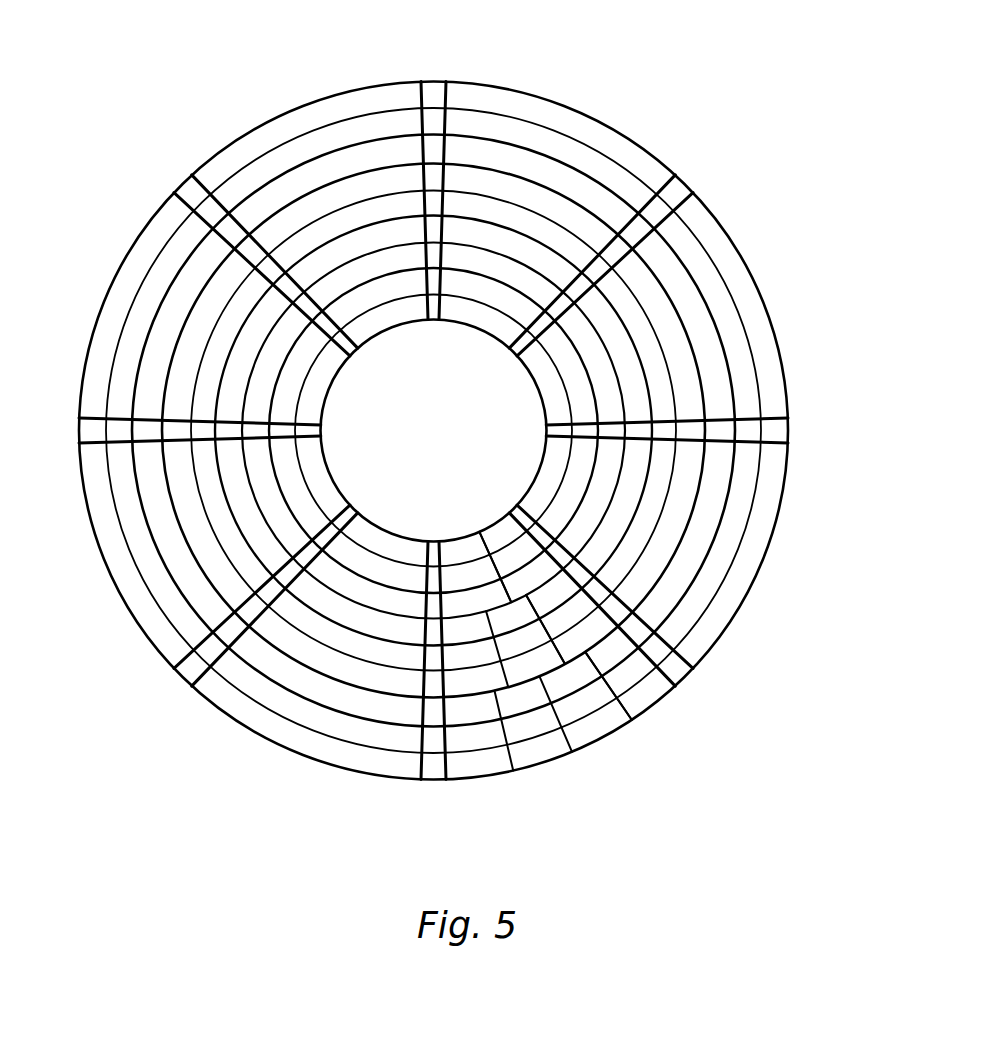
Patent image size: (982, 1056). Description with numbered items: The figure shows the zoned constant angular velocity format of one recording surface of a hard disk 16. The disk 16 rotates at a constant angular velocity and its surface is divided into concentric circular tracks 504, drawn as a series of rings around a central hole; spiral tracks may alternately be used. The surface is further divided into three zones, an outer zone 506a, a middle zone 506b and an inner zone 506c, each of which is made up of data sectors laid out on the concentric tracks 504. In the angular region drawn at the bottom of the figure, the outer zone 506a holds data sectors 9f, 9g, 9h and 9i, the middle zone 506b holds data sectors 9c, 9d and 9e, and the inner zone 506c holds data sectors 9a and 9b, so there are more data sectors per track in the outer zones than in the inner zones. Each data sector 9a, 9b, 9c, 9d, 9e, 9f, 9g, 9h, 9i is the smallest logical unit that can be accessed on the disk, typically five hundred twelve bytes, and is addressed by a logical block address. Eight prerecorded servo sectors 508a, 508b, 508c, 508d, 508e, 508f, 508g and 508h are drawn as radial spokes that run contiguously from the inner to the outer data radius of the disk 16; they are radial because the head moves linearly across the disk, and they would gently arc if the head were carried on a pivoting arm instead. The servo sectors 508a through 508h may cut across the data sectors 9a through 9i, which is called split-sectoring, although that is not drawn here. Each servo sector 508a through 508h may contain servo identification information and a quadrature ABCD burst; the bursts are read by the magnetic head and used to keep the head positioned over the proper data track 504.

The disk 16 is at (244, 790).
The track 504 is at (162, 282).
The outer zone 506a is at (489, 134).
The middle zone 506b is at (515, 203).
The inner zone 506c is at (500, 284).
The servo sector 508a is at (434, 81).
The servo sector 508b is at (686, 182).
The servo sector 508c is at (788, 428).
The servo sector 508d is at (690, 684).
The servo sector 508e is at (432, 783).
The servo sector 508f is at (182, 680).
The servo sector 508g is at (78, 432).
The servo sector 508h is at (183, 181).
The data sector 9a is at (480, 567).
The data sector 9b is at (505, 567).
The data sector 9c is at (481, 649).
The data sector 9d is at (534, 629).
The data sector 9e is at (555, 629).
The data sector 9f is at (485, 731).
The data sector 9g is at (542, 714).
The data sector 9h is at (599, 686).
The data sector 9i is at (616, 686).